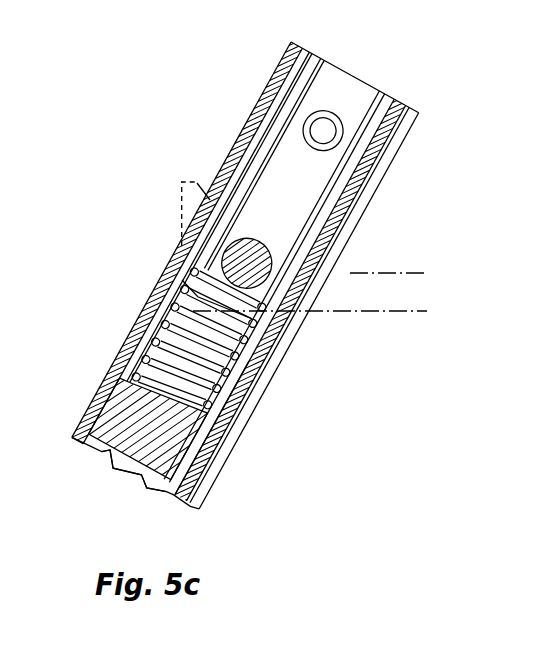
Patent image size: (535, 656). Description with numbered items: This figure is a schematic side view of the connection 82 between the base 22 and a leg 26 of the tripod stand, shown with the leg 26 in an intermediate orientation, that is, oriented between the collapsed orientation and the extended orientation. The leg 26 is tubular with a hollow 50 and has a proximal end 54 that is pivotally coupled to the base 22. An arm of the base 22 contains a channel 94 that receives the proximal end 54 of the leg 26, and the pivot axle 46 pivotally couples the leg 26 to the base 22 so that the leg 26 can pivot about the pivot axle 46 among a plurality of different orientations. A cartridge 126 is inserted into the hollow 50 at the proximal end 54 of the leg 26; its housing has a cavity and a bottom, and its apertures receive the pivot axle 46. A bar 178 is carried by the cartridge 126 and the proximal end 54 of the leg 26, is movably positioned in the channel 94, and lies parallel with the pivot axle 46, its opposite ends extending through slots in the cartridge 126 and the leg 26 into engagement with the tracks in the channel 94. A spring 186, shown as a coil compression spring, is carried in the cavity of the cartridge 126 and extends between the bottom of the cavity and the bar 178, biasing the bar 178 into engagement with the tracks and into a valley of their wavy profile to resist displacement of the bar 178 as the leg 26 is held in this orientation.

The cartridge 126 is at (383, 72).
The leg 26 is at (222, 450).
The pivot axle 46 is at (320, 131).
The connection 82 is at (196, 154).
The base 22 is at (408, 258).
The channel 94 is at (378, 290).
The bar 178 is at (222, 262).
The proximal end 54 is at (87, 400).
The spring 186 is at (242, 398).
The hollow 50 is at (123, 463).